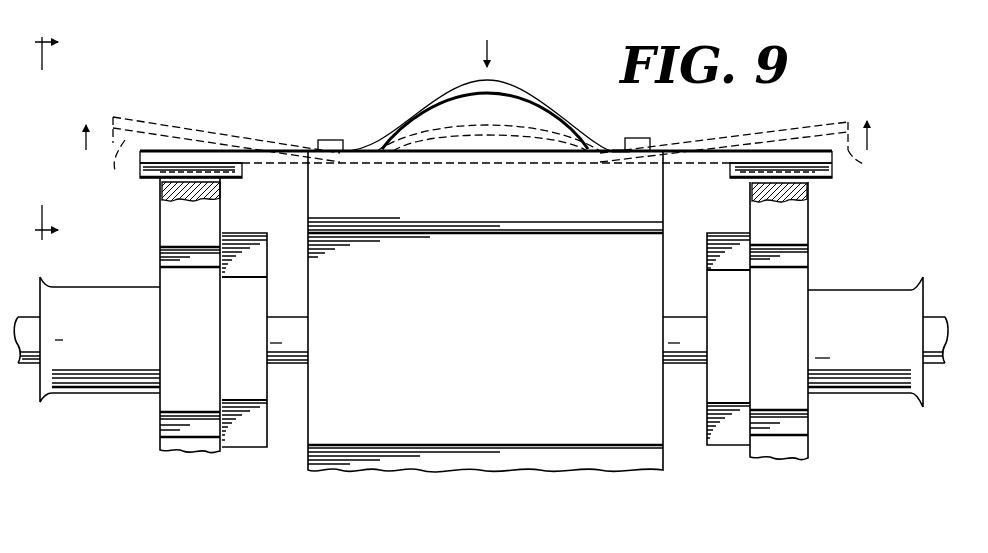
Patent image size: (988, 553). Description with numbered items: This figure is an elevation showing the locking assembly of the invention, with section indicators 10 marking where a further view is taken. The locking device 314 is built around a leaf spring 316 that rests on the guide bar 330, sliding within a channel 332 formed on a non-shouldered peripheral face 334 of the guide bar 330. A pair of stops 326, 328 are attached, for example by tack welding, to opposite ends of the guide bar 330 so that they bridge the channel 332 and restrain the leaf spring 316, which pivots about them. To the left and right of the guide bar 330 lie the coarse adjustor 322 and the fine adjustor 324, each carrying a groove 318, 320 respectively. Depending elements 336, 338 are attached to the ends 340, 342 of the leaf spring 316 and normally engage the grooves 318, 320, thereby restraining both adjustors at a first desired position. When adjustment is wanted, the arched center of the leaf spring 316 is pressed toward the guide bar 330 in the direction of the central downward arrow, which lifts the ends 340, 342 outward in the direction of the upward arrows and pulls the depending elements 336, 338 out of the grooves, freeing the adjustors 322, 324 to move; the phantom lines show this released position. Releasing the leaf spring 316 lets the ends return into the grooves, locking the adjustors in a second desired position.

The section line 10- 10 is at (65, 137).
The locking device 314 is at (376, 66).
The leaf spring 316 is at (537, 100).
The groove 318 is at (160, 182).
The groove 320 is at (810, 182).
The coarse adjustor 322 is at (173, 277).
The fine adjustor 324 is at (793, 227).
The stop 326 is at (333, 140).
The stop 328 is at (642, 138).
The guide bar 330 is at (643, 195).
The channel 332 is at (463, 153).
The non-shouldered peripheral face 334 is at (622, 147).
The depending element 336 is at (140, 170).
The depending element 338 is at (833, 170).
The end of leaf spring 340 is at (188, 157).
The end of leaf spring 342 is at (820, 120).